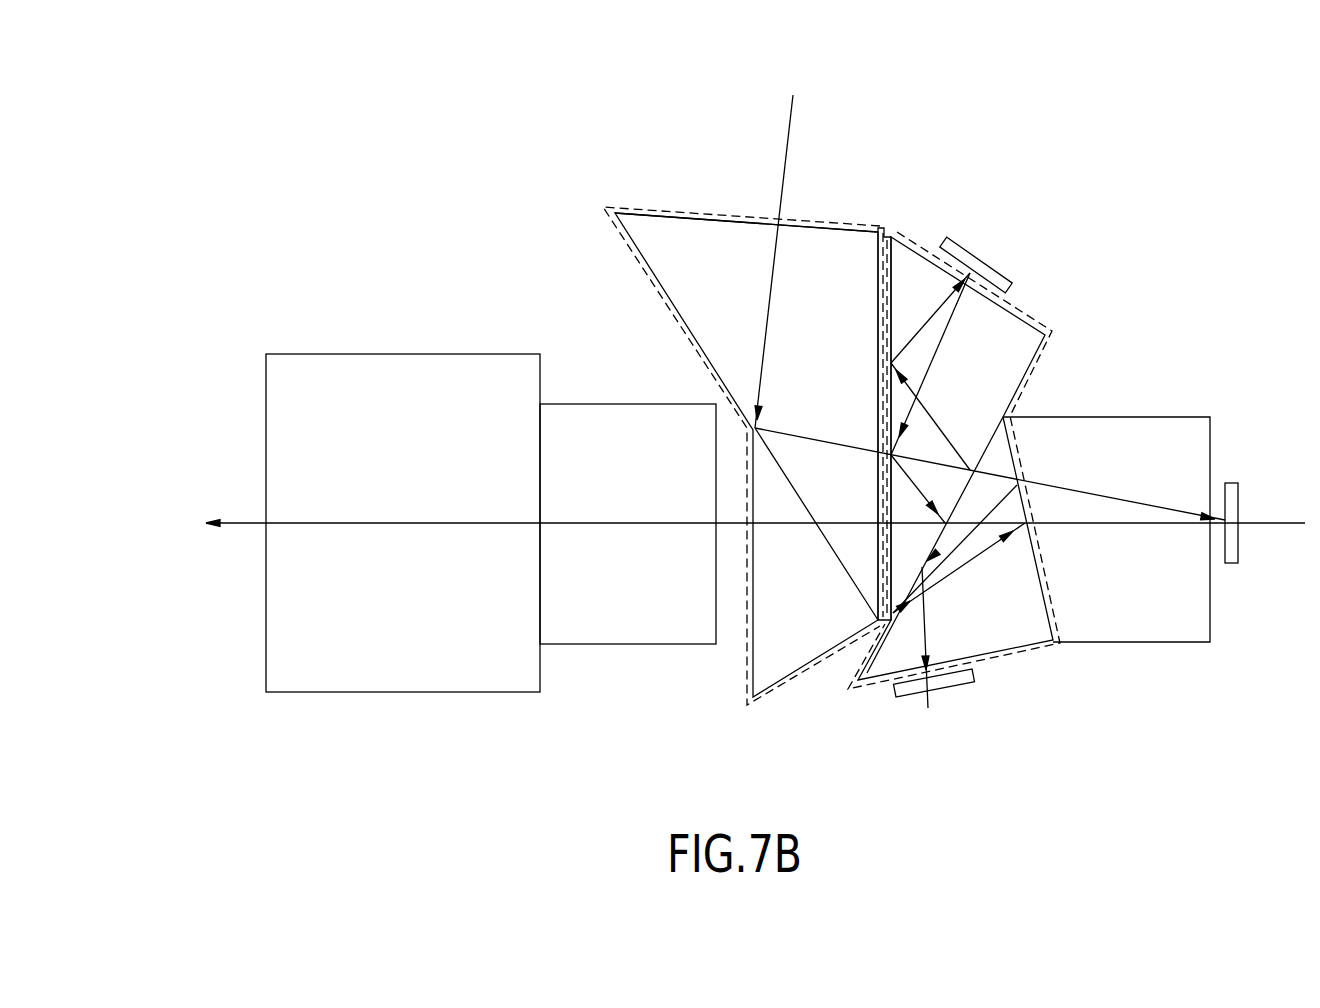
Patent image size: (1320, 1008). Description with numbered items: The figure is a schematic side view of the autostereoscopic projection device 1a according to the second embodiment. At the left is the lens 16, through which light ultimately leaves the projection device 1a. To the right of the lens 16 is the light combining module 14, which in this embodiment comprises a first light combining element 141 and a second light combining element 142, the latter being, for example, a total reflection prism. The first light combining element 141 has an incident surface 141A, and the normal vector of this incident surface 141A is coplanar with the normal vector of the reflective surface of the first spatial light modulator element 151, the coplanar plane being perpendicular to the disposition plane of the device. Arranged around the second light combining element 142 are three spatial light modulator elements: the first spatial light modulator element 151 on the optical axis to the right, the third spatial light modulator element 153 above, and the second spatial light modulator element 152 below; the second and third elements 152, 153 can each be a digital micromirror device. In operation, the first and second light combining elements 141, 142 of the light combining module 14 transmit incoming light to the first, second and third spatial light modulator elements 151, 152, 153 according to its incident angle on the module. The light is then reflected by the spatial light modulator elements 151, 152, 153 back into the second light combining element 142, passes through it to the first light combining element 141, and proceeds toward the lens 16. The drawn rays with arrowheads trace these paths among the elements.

The autostereoscopic projection device 1a is at (260, 145).
The lens 16 is at (390, 352).
The light combining module 14 is at (818, 404).
The first light combining element 141 is at (728, 422).
The incident surface 141A is at (686, 205).
The second light combining element 142 is at (912, 245).
The first spatial light modulator element 151 is at (1238, 510).
The second spatial light modulator element 152 is at (925, 703).
The third spatial light modulator element 153 is at (988, 262).